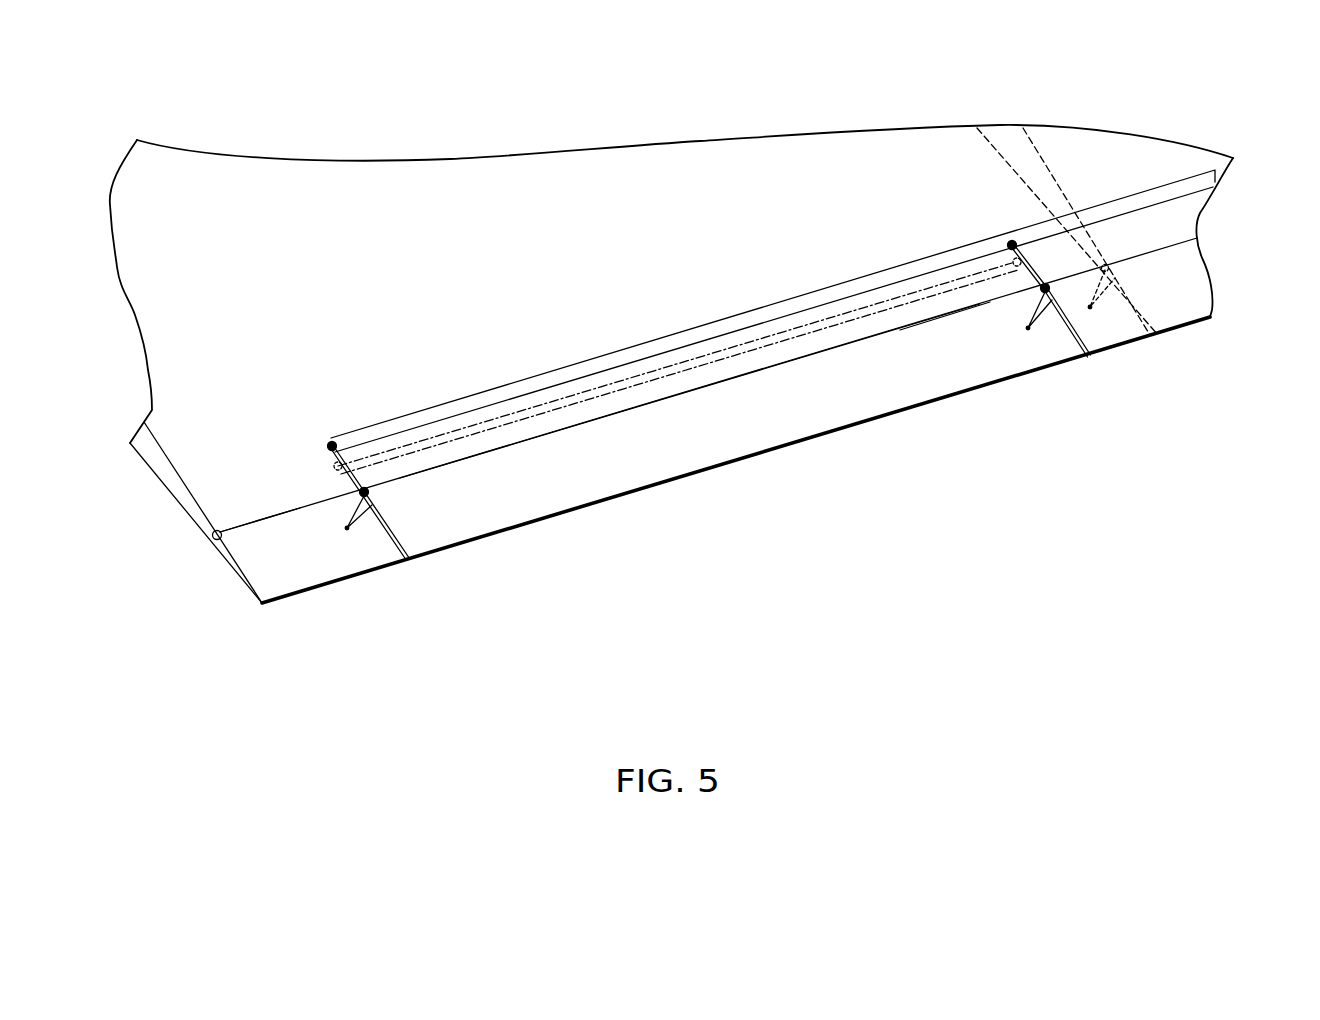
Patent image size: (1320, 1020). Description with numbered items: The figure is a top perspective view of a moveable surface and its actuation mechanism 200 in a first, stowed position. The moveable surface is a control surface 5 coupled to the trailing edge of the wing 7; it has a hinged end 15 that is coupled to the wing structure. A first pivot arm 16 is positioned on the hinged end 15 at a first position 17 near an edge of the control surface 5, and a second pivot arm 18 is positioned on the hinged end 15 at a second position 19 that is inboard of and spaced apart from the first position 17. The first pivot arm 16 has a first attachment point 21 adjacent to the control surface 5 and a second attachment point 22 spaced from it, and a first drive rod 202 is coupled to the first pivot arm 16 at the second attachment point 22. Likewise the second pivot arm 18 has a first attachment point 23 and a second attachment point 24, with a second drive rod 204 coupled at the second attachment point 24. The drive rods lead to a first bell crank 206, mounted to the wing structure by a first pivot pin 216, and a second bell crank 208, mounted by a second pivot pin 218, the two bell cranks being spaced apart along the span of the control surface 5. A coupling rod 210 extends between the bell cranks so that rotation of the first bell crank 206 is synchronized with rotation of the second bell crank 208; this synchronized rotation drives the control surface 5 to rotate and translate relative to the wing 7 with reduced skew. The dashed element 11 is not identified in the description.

The control surface 5 is at (585, 468).
The wing 7 is at (442, 170).
The strut in alternate position 11 is at (1078, 213).
The hinged end 15 is at (600, 426).
The first pivot arm 16 is at (403, 555).
The first position 17 is at (278, 536).
The second pivot arm 18 is at (1083, 348).
The second position 19 is at (982, 320).
The first attachment point 21 is at (348, 543).
The second attachment point 22 is at (378, 492).
The first attachment point 23 is at (1028, 338).
The second attachment point 24 is at (1058, 284).
The actuation mechanism 200 is at (220, 689).
The first drive rod 202 is at (340, 468).
The second drive rod 204 is at (1025, 256).
The first bell crank 206 is at (332, 460).
The second bell crank 208 is at (1010, 258).
The coupling rod 210 is at (432, 424).
The first pivot pin 216 is at (331, 442).
The second pivot pin 218 is at (1008, 240).